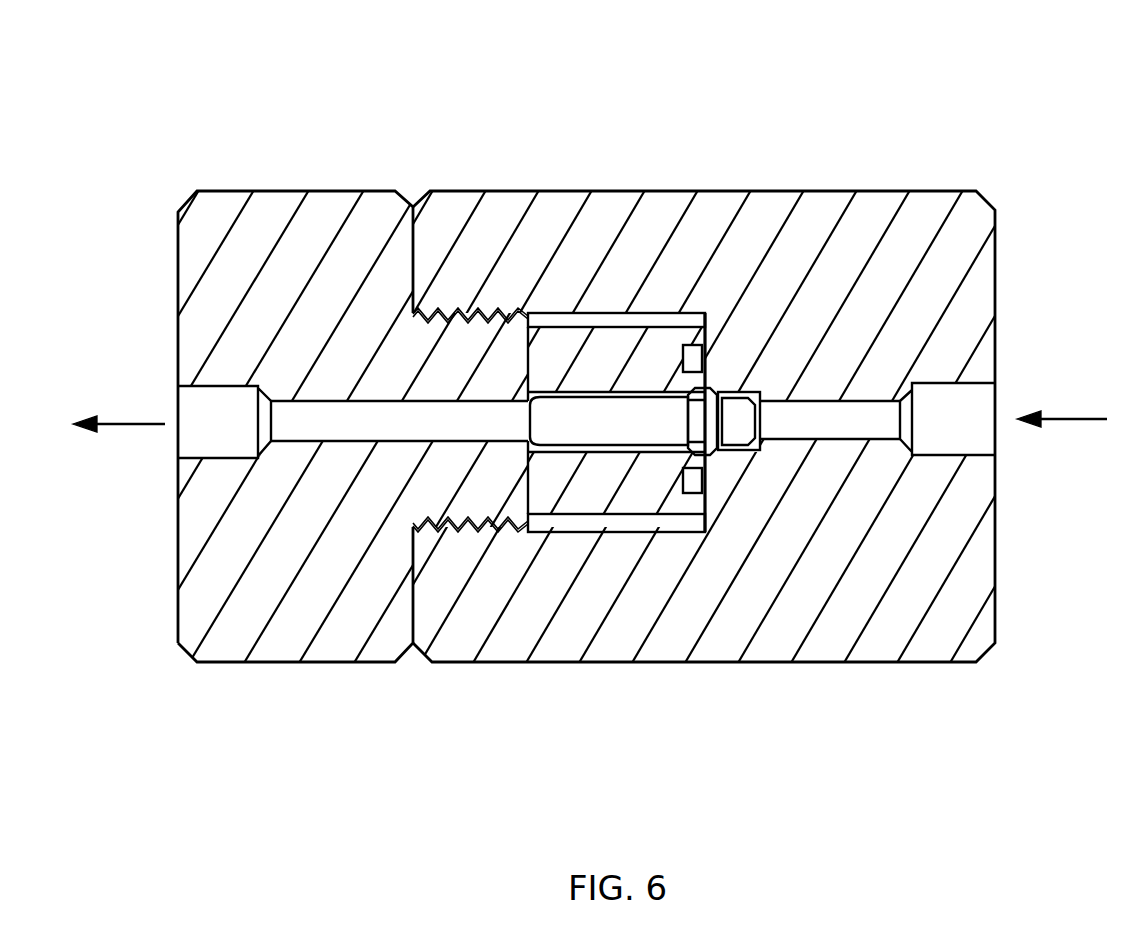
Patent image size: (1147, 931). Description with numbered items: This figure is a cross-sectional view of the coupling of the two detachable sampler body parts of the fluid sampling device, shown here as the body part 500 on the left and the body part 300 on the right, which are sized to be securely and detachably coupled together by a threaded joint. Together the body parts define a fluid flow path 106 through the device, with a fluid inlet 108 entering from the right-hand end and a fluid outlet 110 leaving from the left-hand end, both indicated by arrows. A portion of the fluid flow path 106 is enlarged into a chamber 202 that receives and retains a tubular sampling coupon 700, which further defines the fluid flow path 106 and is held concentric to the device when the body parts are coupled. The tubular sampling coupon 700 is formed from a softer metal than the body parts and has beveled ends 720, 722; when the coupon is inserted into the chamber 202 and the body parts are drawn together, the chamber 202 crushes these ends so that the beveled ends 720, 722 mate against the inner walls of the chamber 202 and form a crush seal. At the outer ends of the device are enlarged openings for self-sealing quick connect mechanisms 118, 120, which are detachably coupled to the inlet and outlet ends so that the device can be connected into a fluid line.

The first body / inlet fitting housing 500 is at (195, 173).
The second body / valve housing 300 is at (1003, 183).
The beveled end 720 is at (527, 393).
The tubular sampling coupon 700 is at (568, 472).
The chamber 202 is at (744, 390).
The beveled end 722 is at (762, 392).
The self-sealing quick connect mechanism 118 is at (190, 405).
The self-sealing quick connect mechanism 120 is at (983, 447).
The fluid flow path 106 is at (375, 431).
The fluid inlet 108 is at (1090, 419).
The fluid outlet 110 is at (130, 425).